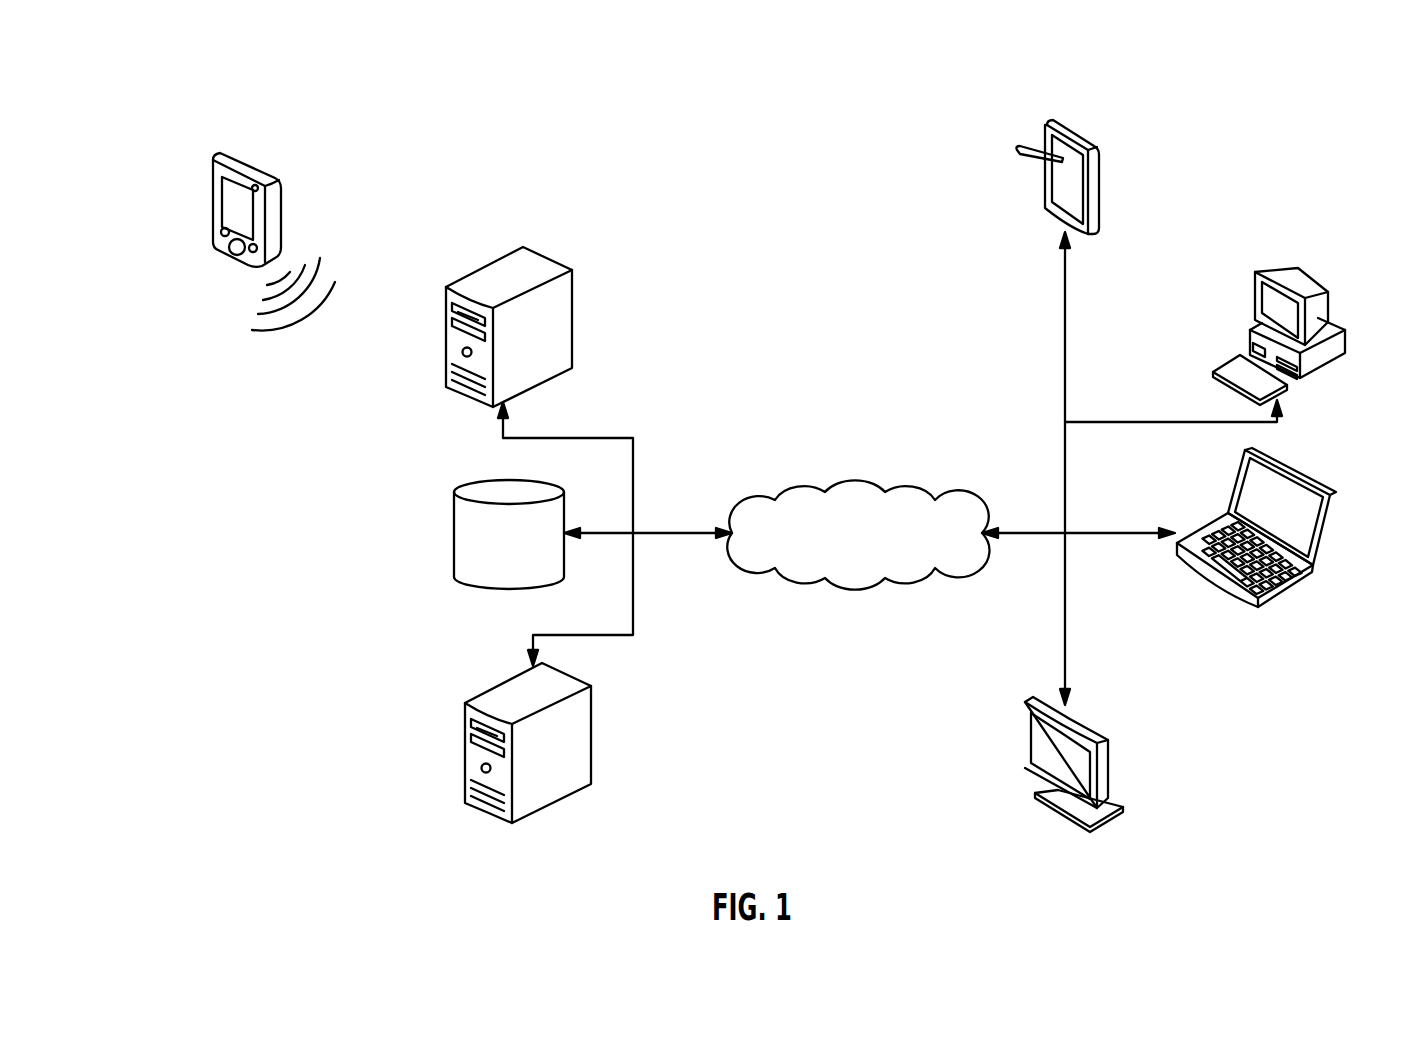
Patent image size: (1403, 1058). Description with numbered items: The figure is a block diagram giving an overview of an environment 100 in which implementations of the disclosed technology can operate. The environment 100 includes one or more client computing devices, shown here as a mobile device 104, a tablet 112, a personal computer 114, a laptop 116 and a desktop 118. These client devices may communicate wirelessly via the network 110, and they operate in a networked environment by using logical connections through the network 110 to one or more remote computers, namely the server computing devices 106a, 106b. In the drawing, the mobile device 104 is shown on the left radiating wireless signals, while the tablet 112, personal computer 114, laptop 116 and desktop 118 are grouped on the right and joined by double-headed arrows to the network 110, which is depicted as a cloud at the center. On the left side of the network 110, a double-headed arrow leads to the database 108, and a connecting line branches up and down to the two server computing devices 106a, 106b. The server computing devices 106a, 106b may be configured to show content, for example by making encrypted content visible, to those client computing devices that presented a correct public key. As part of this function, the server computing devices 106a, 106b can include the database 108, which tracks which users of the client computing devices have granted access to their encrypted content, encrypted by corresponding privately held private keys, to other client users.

The environment 100 is at (1287, 54).
The mobile device 104 is at (212, 198).
The server computing device 106a is at (493, 258).
The server computing device 106b is at (585, 762).
The database 108 is at (453, 533).
The network 110 is at (855, 482).
The tablet 112 is at (1077, 132).
The personal computer 114 is at (1307, 278).
The laptop 116 is at (1310, 480).
The desktop 118 is at (1110, 765).